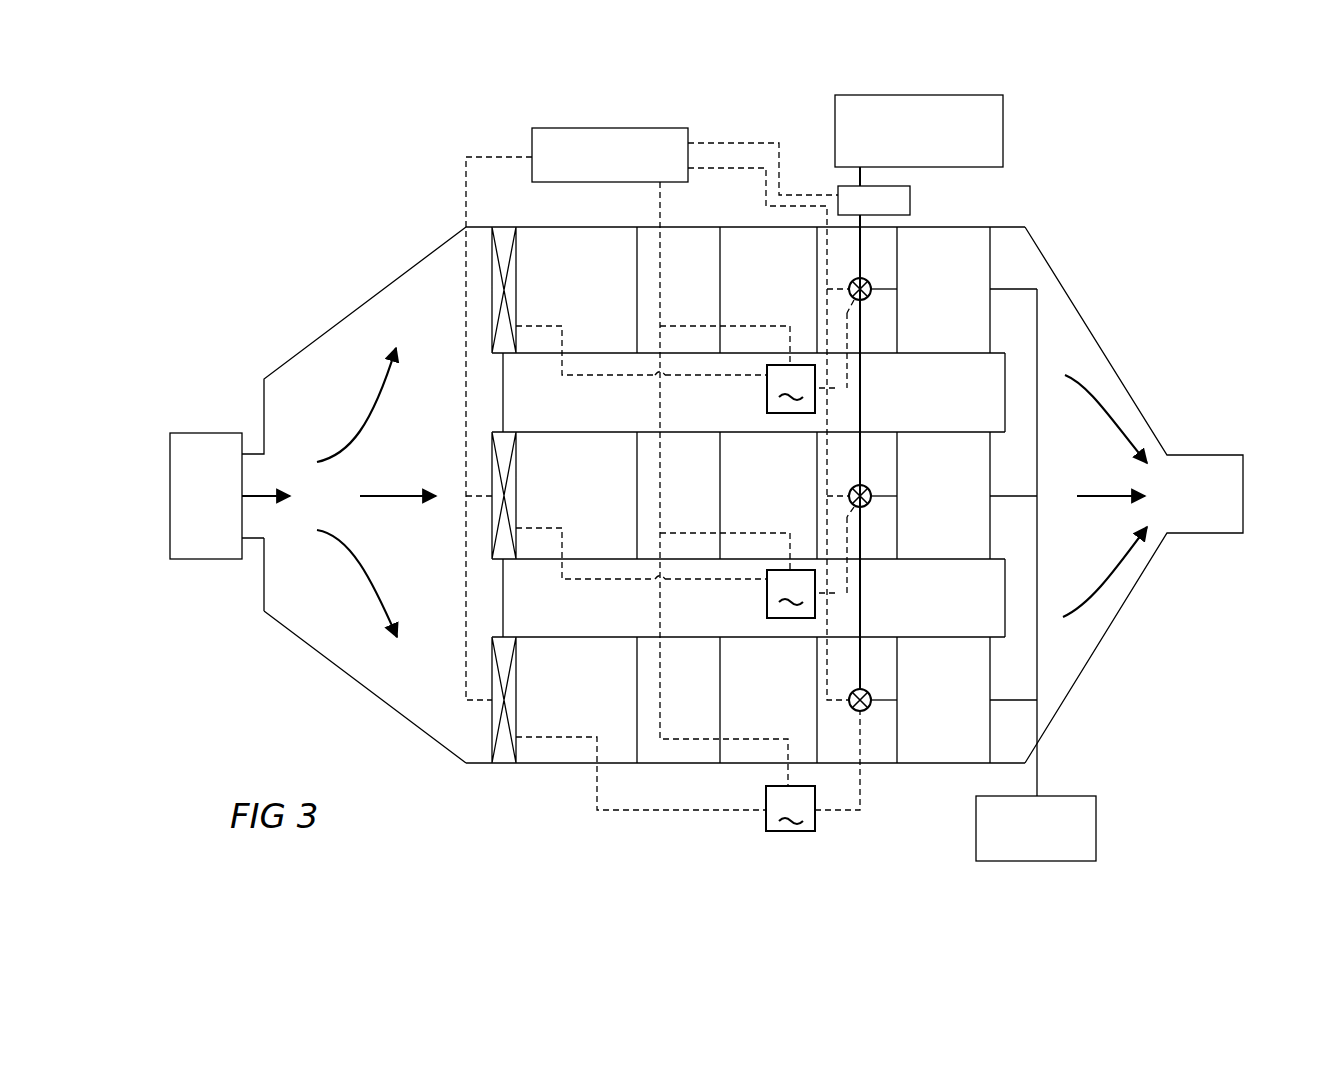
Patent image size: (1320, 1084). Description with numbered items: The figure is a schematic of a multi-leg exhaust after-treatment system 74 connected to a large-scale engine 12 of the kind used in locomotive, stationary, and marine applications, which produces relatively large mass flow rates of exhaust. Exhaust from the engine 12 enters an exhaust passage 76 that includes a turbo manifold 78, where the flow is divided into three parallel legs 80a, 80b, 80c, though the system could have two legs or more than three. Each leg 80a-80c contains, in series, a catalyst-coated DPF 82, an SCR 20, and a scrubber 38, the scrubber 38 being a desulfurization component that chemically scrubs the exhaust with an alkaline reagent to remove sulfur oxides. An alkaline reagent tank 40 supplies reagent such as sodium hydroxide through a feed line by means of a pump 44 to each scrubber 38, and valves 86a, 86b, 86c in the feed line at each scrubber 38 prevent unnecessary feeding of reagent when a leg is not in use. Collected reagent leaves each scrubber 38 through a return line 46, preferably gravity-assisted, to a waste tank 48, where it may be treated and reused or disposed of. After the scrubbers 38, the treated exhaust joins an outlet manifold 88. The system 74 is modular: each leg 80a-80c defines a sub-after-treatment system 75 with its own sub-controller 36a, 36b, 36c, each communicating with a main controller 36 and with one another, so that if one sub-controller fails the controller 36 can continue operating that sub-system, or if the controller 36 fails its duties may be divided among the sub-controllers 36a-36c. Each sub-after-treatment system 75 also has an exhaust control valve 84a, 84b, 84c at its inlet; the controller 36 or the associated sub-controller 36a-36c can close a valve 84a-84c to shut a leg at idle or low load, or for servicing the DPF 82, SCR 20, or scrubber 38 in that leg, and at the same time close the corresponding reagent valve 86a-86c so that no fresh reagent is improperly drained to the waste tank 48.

The large-scale engine 12 is at (212, 514).
The SCR 20 is at (778, 300).
The controller 36 is at (531, 141).
The sub-controller 36a is at (685, 356).
The sub-controller 36b is at (685, 562).
The sub-controller 36c is at (688, 771).
The scrubber 38 is at (954, 299).
The alkaline reagent tank 40 is at (1003, 133).
The pump 44 is at (910, 196).
The return line 46 is at (1003, 291).
The waste tank 48 is at (1096, 835).
The multi-leg exhaust after-treatment system 74 is at (330, 255).
The sub-after-treatment system 75 is at (533, 357).
The exhaust passage 76 is at (252, 538).
The turbo manifold 78 is at (414, 568).
The leg 80a is at (680, 227).
The leg 80b is at (680, 432).
The leg 80c is at (680, 637).
The catalyst-coated DPF 82 is at (577, 295).
The exhaust control valve 84a is at (492, 290).
The exhaust control valve 84b is at (492, 468).
The exhaust control valve 84c is at (492, 672).
The valve 86a is at (866, 300).
The valve 86b is at (866, 506).
The valve 86c is at (866, 711).
The outlet manifold 88 is at (1133, 588).